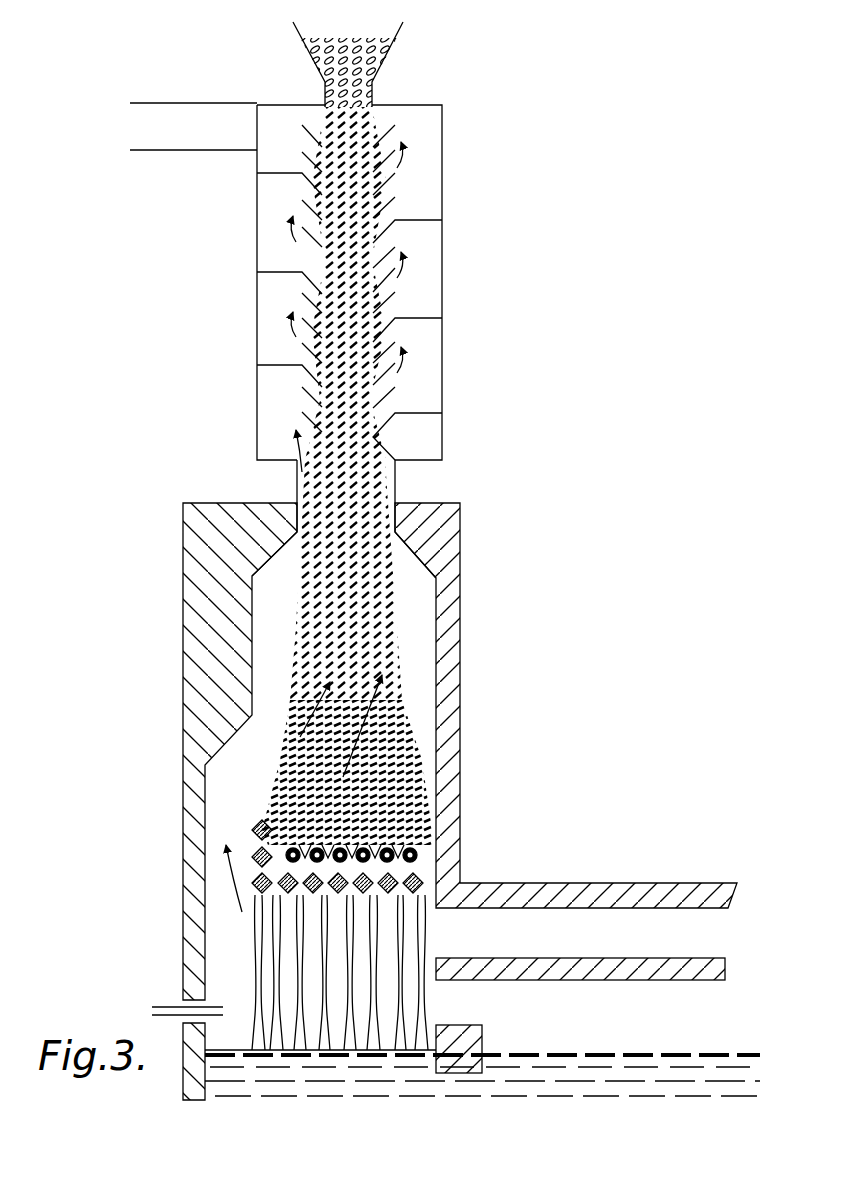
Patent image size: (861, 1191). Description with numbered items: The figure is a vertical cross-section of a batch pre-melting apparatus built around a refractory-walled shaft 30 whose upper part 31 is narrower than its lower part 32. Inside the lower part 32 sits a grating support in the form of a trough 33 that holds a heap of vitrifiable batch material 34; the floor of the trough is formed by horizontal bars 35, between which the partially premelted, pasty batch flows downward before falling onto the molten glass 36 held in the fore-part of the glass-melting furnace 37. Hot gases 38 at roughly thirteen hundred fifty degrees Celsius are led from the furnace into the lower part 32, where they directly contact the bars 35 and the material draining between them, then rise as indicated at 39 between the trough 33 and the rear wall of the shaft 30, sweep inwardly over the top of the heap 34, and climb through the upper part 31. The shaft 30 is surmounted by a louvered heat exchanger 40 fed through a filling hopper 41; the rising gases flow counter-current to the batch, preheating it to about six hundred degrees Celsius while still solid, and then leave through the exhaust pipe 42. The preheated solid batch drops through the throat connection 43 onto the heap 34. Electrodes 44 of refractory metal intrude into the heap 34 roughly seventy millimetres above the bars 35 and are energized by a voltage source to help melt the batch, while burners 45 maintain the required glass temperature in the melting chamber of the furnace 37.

The shaft 30 is at (183, 616).
The upper part 31 is at (364, 606).
The lower part 32 is at (338, 981).
The trough 33 is at (250, 882).
The batch material 34 is at (385, 790).
The bars 35 is at (413, 893).
The molten glass 36 is at (358, 1091).
The glass-melting furnace 37 is at (595, 968).
The hot gases 38 is at (512, 932).
The upward gas flow 39 is at (225, 853).
The louvered heat exchanger 40 is at (257, 308).
The filling hopper 41 is at (348, 55).
The exhaust pipe 42 is at (203, 127).
The throat connection 43 is at (344, 519).
The electrodes 44 is at (423, 848).
The burners 45 is at (525, 1037).